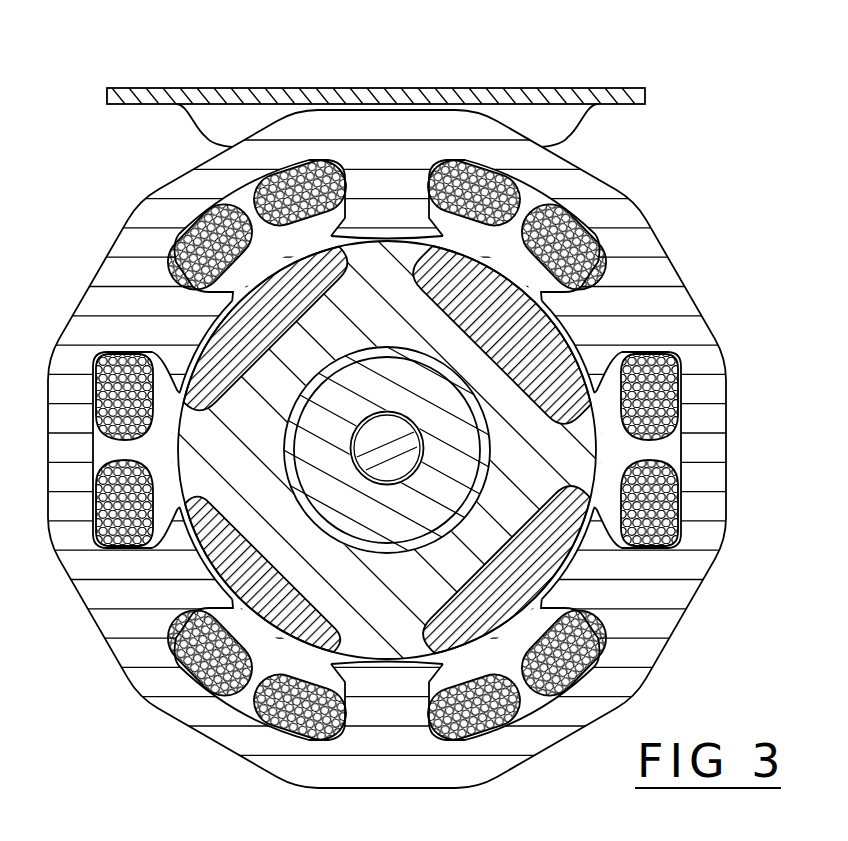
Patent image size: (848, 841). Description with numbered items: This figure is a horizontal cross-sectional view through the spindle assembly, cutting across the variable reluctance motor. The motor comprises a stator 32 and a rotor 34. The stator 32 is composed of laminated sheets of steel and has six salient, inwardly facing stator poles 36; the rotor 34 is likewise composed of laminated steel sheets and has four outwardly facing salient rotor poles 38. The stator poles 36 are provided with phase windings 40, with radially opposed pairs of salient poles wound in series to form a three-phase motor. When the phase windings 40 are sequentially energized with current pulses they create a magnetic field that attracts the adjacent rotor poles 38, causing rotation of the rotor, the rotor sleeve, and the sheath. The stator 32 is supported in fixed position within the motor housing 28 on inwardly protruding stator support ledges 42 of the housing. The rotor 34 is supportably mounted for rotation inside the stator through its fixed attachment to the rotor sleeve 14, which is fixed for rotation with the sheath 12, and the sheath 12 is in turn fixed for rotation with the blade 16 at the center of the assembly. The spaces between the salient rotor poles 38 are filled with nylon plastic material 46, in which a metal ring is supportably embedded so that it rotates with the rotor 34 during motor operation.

The sheath 12 is at (456, 433).
The rotor sleeve 14 is at (367, 546).
The blade 16 is at (380, 443).
The motor housing 28 is at (227, 88).
The stator 32 is at (674, 300).
The rotor 34 is at (235, 459).
The salient stator poles 36 is at (606, 502).
The salient rotor poles 38 is at (458, 248).
The phase windings 40 is at (170, 247).
The stator support ledges 42 is at (557, 115).
The nylon plastic material 46 is at (557, 312).